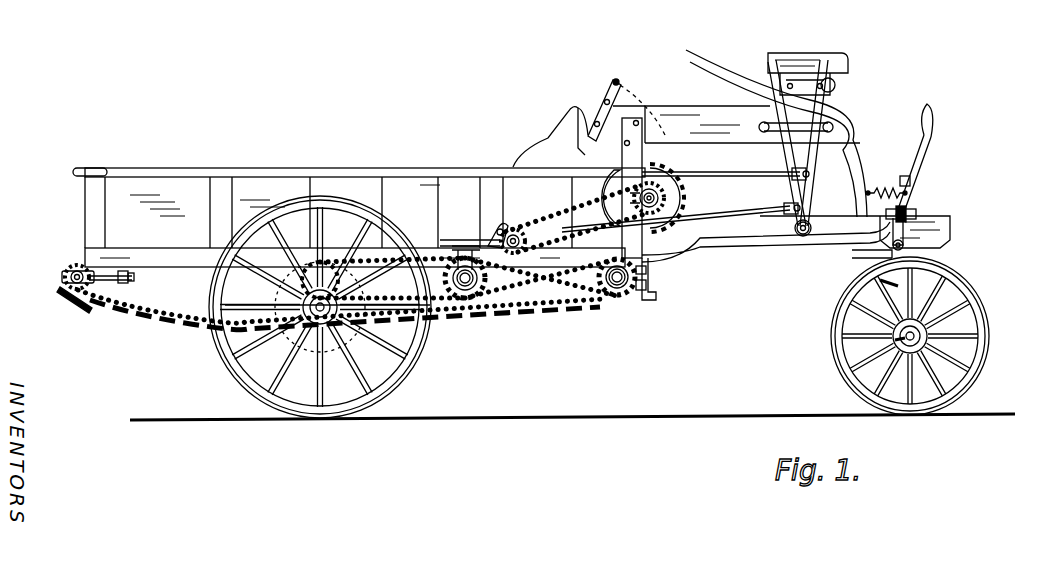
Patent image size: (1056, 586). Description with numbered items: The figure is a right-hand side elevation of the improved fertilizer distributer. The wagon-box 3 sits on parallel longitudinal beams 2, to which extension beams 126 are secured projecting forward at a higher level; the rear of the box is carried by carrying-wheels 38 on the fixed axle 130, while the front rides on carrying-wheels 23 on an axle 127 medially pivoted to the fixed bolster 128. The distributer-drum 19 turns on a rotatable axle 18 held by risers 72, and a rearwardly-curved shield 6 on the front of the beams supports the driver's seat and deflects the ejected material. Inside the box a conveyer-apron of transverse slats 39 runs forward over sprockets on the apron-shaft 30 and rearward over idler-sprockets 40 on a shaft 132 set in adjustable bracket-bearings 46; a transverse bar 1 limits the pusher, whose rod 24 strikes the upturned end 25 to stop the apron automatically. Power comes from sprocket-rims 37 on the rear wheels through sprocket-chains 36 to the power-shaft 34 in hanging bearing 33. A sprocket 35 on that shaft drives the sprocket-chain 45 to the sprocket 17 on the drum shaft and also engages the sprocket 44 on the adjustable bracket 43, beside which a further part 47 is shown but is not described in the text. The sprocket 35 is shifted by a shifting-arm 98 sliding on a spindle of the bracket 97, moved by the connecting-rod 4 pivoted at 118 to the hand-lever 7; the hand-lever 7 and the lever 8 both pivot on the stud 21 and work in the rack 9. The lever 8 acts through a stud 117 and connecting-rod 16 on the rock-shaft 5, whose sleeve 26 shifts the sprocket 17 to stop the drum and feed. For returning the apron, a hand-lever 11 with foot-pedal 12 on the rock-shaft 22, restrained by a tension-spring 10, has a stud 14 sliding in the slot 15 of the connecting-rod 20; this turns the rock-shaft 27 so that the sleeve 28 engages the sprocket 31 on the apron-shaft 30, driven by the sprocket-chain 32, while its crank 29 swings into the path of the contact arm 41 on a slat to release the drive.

The transverse bar 1 is at (82, 169).
The longitudinal beams 2 is at (180, 262).
The wagon-box 3 is at (808, 74).
The connecting-rod 4 is at (760, 212).
The rock-shaft 5 is at (620, 190).
The shield 6 is at (722, 64).
The hand-lever 7 is at (770, 80).
The lever 8 is at (822, 76).
The rack 9 is at (820, 126).
The tension-spring 10 is at (880, 190).
The hand-lever 11 is at (927, 112).
The foot-pedal 12 is at (912, 181).
The stud 14 is at (952, 226).
The slot 15 is at (918, 214).
The connecting-rod 16 is at (745, 172).
The sprocket 17 is at (668, 186).
The rotatable axle 18 is at (660, 203).
The distributer-drum 19 is at (666, 192).
The connecting-rod 20 is at (745, 257).
The stud 21 is at (800, 236).
The rock-shaft 22 is at (945, 246).
The carrying-wheels 23 is at (990, 350).
The rod 24 is at (566, 118).
The upturned end 25 is at (578, 108).
The sleeve 26 is at (628, 199).
The rock-shaft 27 is at (647, 272).
The sleeve 28 is at (648, 288).
The crank 29 is at (648, 302).
The apron-shaft 30 is at (617, 297).
The sprocket 31 is at (604, 298).
The sprocket-chain 32 is at (541, 280).
The hanging bearing 33 is at (541, 281).
The power-shaft 34 is at (470, 300).
The sprocket 35 is at (460, 300).
The sprocket-chains 36 is at (400, 330).
The sprocket-rims 37 is at (312, 345).
The carrying-wheels 38 is at (235, 333).
The slats 39 is at (150, 318).
The idler-sprockets 40 is at (70, 266).
The contact arm 41 is at (72, 308).
The bracket 43 is at (503, 232).
The sprocket 44 is at (515, 236).
The sprocket-chain 45 is at (572, 234).
The bracket-bearings 46 is at (134, 279).
The bar 47 is at (482, 242).
The risers 72 is at (632, 124).
The bracket 97 is at (457, 256).
The shifting-arm 98 is at (445, 245).
The stud 117 is at (806, 174).
The pivot 118 is at (800, 208).
The extension beams 126 is at (700, 255).
The axle 127 is at (900, 342).
The bolster 128 is at (888, 282).
The fixed axle 130 is at (280, 343).
The shaft 132 is at (66, 278).